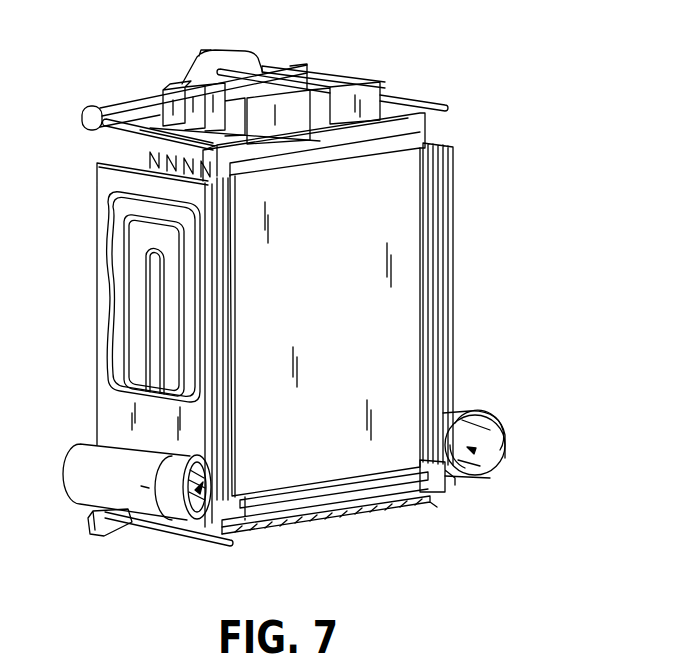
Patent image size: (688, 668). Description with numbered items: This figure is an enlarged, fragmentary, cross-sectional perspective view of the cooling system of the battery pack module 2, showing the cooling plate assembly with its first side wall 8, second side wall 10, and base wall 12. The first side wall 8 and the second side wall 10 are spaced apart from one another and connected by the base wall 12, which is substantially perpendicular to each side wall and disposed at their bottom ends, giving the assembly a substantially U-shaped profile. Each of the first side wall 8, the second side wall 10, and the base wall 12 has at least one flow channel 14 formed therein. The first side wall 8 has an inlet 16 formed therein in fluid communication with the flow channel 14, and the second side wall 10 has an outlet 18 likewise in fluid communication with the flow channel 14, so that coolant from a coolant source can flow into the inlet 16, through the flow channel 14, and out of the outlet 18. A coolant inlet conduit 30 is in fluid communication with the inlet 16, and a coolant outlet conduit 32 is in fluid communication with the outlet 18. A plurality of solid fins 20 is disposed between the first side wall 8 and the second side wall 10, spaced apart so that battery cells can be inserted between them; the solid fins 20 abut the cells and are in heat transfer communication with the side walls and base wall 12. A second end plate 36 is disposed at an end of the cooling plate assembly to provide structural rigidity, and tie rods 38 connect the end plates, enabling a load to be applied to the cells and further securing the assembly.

The battery pack module 2 is at (442, 62).
The first side wall 8 is at (100, 242).
The second side wall 10 is at (455, 155).
The base wall 12 is at (282, 534).
The flow channel 14 is at (200, 356).
The inlet 16 is at (193, 520).
The outlet 18 is at (467, 447).
The solid fins 20 is at (345, 303).
The coolant inlet conduit 30 is at (83, 467).
The coolant outlet conduit 32 is at (487, 410).
The second end plate 36 is at (107, 537).
The tie rods 38 is at (437, 507).